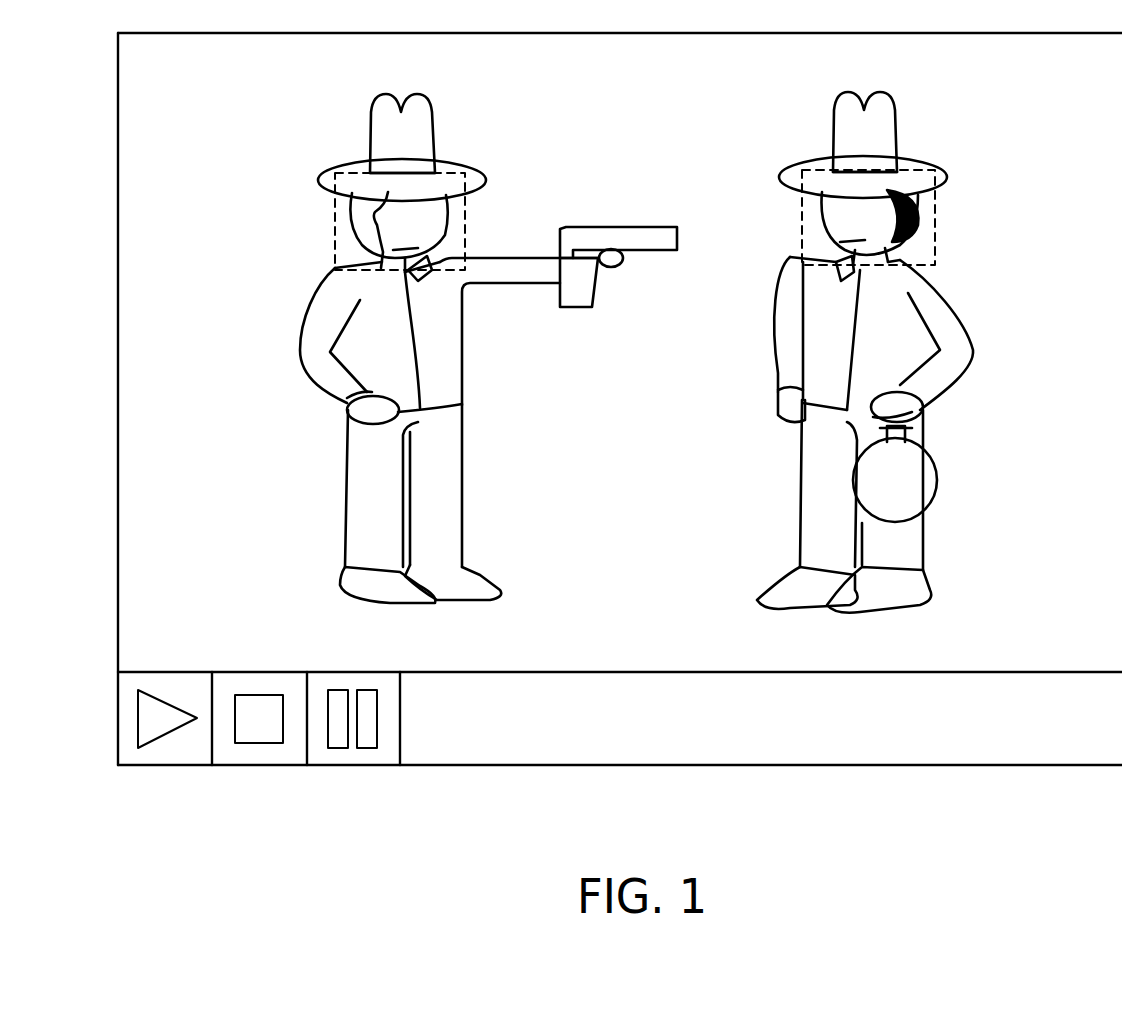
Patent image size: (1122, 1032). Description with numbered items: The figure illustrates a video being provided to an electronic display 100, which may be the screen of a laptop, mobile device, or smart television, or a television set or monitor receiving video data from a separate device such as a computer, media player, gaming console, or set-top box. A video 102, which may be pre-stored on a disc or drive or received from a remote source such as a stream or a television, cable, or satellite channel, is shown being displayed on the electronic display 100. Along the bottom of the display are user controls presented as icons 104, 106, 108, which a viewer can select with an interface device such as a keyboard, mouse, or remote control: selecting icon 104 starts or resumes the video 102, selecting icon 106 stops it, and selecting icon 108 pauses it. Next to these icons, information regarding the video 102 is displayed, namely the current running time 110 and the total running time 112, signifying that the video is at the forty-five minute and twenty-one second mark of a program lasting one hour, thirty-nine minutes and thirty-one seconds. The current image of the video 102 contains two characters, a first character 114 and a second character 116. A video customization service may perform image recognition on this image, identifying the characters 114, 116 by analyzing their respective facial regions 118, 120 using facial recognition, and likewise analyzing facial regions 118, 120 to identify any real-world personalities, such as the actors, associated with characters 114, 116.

The electronic display 100 is at (118, 110).
The video 102 is at (137, 297).
The icon 104 is at (198, 748).
The icon 106 is at (292, 748).
The icon 108 is at (387, 748).
The current running time 110 is at (498, 748).
The total running time 112 is at (643, 748).
The first character 114 is at (432, 130).
The second character 116 is at (893, 138).
The facial region 118 is at (335, 217).
The facial region 120 is at (935, 212).